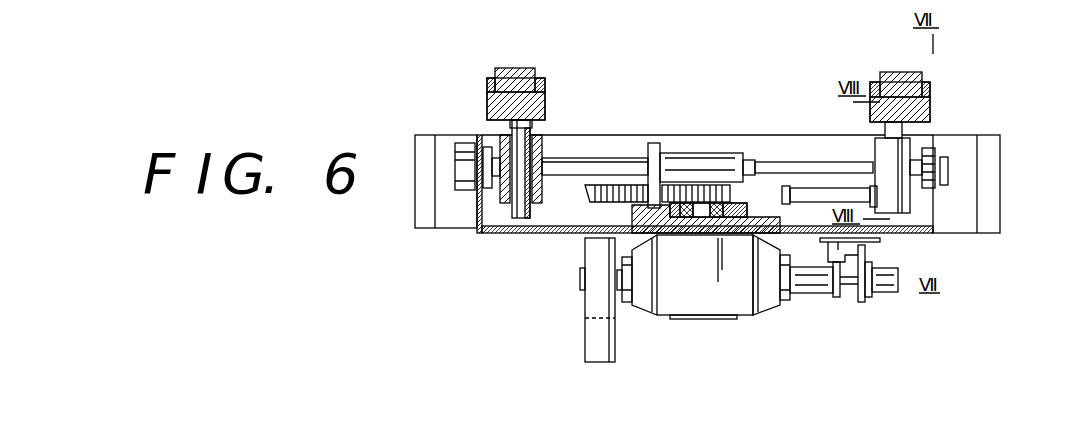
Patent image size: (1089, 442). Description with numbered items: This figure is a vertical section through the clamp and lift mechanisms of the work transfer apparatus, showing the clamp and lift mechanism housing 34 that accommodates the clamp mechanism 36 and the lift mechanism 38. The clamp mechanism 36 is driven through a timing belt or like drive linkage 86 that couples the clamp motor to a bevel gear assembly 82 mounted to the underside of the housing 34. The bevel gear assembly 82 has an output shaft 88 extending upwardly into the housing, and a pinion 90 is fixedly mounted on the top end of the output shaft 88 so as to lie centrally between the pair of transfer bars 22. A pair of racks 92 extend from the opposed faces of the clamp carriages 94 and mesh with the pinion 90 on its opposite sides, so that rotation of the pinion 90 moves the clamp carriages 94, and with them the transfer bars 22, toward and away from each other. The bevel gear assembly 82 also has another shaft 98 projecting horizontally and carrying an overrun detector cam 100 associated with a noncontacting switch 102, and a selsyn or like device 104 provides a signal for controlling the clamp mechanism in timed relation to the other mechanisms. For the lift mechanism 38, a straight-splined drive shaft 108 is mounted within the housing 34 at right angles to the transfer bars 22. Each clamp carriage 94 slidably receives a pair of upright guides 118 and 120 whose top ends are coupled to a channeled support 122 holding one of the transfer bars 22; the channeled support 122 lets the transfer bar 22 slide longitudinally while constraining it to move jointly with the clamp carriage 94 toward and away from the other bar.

The transfer bars 22 is at (515, 68).
The clamp and lift mechanism housing 34 is at (933, 232).
The clamp mechanism 36 is at (757, 322).
The lift mechanism 38 is at (466, 118).
The bevel gear assembly 82 is at (697, 305).
The timing belt or like drive linkage 86 is at (596, 342).
The output shaft 88 is at (703, 235).
The pinion 90 is at (731, 195).
The racks 92 is at (604, 203).
The clamp carriages 94 is at (500, 202).
The shaft 98 is at (810, 297).
The overrun detector cam 100 is at (814, 246).
The noncontacting switch 102 is at (848, 258).
The selsyn or like device 104 is at (889, 291).
The straight-splined drive shaft 108 is at (768, 157).
The upright guide 118 is at (531, 130).
The upright guide 120 is at (521, 169).
The channeled support 122 is at (547, 87).